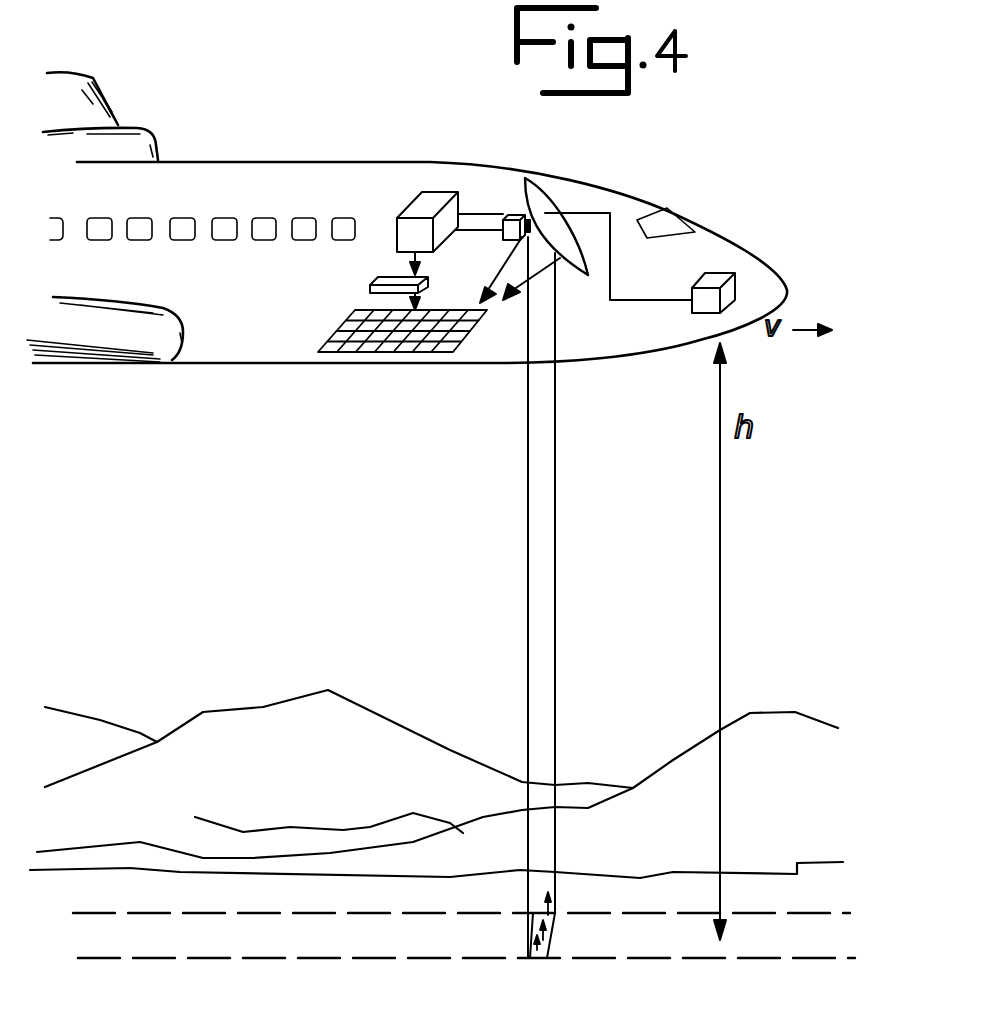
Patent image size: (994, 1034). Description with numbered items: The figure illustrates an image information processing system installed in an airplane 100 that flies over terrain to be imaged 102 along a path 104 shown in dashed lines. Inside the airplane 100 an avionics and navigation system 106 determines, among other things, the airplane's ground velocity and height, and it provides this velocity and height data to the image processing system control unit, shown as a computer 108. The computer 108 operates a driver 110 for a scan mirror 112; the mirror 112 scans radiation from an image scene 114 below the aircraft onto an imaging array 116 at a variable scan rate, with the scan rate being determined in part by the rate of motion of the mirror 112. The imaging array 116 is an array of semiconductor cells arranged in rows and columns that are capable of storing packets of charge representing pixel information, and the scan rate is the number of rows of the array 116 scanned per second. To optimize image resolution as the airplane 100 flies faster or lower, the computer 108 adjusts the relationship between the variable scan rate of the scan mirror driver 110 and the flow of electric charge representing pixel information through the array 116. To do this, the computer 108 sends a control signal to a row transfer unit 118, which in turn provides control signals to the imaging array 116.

The airplane 100 is at (405, 365).
The terrain to be imaged 102 is at (507, 843).
The path 104 is at (380, 913).
The avionics and navigation system 106 is at (723, 275).
The computer 108 is at (408, 212).
The driver 110 is at (507, 242).
The scan mirror 112 is at (545, 198).
The image scene 114 is at (553, 933).
The imaging array 116 is at (463, 287).
The row transfer unit 118 is at (370, 285).